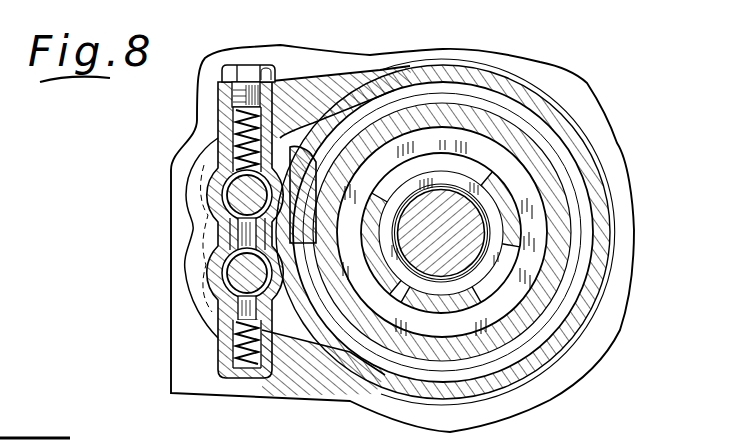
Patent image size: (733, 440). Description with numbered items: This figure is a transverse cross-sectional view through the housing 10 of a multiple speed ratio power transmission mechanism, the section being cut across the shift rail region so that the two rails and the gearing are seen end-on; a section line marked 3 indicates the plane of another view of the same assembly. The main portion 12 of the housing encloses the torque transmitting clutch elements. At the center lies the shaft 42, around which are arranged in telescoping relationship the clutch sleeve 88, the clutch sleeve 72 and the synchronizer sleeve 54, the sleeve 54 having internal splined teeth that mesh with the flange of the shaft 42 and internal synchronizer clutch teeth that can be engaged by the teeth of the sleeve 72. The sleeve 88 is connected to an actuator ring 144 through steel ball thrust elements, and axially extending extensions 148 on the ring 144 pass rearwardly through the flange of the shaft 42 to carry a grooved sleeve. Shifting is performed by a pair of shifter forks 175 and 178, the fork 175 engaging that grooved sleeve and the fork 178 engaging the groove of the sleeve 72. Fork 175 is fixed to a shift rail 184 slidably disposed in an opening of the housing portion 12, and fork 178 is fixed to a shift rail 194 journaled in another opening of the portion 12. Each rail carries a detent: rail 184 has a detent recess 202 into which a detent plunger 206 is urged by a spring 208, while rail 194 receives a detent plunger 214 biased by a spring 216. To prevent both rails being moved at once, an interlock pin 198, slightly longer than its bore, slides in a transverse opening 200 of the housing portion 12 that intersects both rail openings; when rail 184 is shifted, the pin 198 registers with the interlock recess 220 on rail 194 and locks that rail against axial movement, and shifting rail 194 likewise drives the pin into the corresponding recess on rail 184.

The section line 3- 3 is at (247, 12).
The housing 10 is at (468, 45).
The main portion 12 is at (380, 67).
The shaft 42 is at (545, 240).
The synchronizer sleeve 54 is at (516, 113).
The clutch sleeve 72 is at (460, 140).
The clutch sleeve 88 is at (535, 222).
The actuator ring 144 is at (540, 254).
The extensions 148 is at (532, 207).
The shifter fork 175 is at (220, 136).
The shifter fork 178 is at (250, 378).
The shift rail 184 is at (232, 197).
The shift rail 194 is at (232, 278).
The interlock pin 198 is at (228, 225).
The transverse opening 200 is at (225, 243).
The detent recess 202 is at (225, 184).
The detent plunger 206 is at (222, 163).
The spring 208 is at (236, 118).
The detent plunger 214 is at (228, 300).
The spring 216 is at (225, 320).
The interlock recess 220 is at (222, 262).